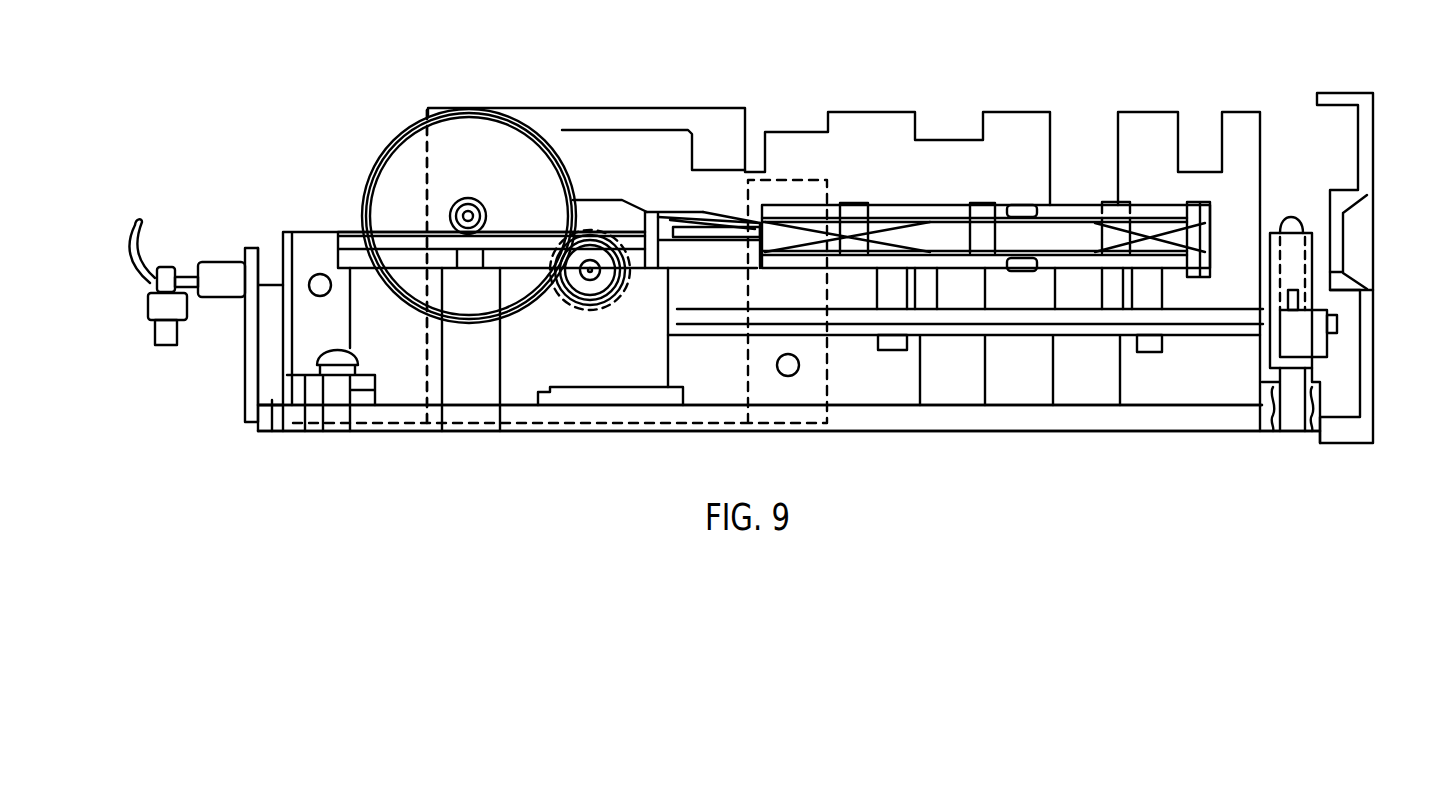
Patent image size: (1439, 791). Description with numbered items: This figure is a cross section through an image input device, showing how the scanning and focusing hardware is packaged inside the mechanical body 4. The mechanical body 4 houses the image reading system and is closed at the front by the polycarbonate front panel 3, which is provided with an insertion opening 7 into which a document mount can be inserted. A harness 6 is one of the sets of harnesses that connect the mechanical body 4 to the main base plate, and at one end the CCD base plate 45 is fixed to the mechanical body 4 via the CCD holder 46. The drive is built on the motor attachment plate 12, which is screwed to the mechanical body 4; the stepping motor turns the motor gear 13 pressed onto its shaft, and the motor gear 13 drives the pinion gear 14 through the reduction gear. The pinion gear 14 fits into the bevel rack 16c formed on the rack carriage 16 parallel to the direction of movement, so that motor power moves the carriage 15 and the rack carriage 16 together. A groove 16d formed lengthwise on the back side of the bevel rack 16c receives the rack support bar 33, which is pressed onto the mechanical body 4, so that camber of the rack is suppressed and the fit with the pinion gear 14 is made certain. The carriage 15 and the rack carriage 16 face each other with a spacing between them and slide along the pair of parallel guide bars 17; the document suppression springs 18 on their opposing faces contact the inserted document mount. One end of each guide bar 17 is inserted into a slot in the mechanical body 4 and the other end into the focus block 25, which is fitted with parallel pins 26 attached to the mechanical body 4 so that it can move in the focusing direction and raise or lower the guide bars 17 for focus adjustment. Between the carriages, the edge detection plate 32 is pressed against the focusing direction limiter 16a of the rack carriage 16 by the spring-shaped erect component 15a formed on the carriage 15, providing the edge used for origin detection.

The front panel 3 is at (1374, 137).
The mechanical body 4 is at (945, 420).
The harness 6 is at (148, 240).
The insertion opening 7 is at (1337, 240).
The motor attachment plate 12 is at (552, 127).
The motor gear 13 is at (585, 290).
The pinion gear 14 is at (477, 133).
The carriage 15 is at (1067, 212).
The erect component 15a is at (697, 215).
The rack carriage 16 is at (1145, 262).
The focusing direction limiter 16a is at (690, 237).
The bevel rack 16c is at (408, 238).
The groove 16d is at (432, 247).
The guide bars 17 is at (1210, 330).
The document suppression springs 18 is at (900, 240).
The focus block 25 is at (1317, 278).
The parallel pins 26 is at (1290, 420).
The edge detection plate 32 is at (703, 232).
The rack support bar 33 is at (472, 385).
The CCD base plate 45 is at (245, 402).
The CCD holder 46 is at (272, 402).